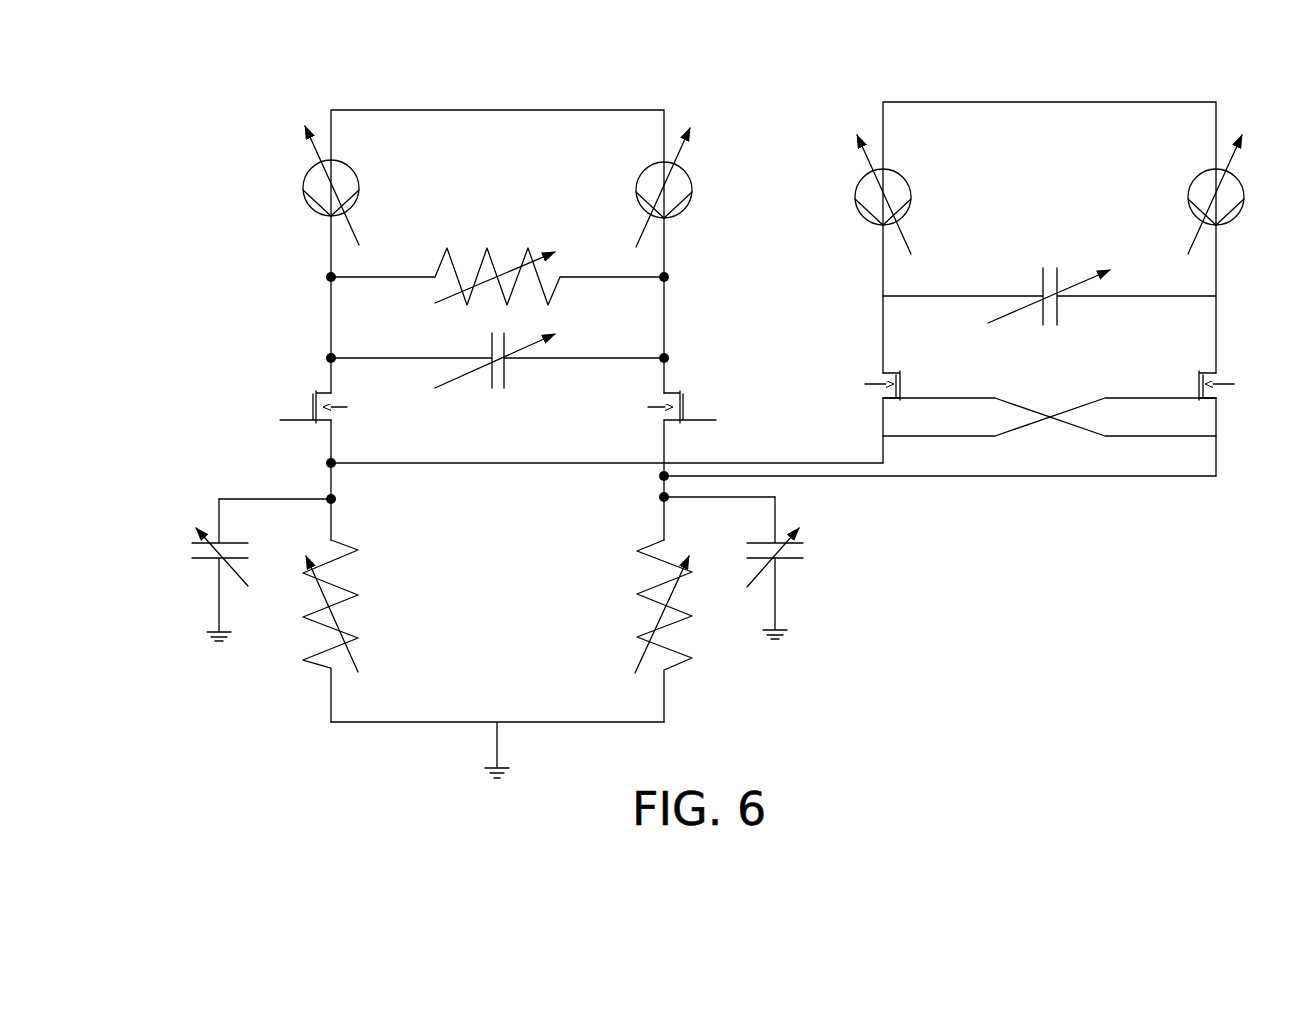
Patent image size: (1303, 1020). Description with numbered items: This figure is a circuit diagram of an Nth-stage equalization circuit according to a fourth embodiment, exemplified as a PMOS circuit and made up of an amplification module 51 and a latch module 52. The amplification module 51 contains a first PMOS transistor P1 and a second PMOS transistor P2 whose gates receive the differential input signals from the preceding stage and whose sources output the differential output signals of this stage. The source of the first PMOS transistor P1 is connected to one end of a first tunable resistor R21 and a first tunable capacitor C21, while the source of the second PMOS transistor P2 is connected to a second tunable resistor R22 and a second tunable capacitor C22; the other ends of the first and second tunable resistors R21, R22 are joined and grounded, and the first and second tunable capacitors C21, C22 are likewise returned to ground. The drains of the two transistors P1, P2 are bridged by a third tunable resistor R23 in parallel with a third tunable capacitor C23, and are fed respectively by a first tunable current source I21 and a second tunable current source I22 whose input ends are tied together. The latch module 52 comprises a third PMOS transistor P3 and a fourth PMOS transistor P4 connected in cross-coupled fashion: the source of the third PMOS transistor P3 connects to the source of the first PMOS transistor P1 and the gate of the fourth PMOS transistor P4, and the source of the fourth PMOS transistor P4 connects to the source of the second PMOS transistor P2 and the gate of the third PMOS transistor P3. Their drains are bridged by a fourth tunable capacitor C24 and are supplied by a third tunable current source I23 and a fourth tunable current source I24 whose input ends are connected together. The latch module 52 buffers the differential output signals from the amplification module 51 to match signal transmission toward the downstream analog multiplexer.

The amplification module 51 is at (265, 144).
The latch module 52 is at (855, 116).
The first tunable current source I21 is at (352, 185).
The second tunable current source I22 is at (645, 187).
The third tunable current source I23 is at (905, 194).
The fourth tunable current source I24 is at (1197, 194).
The third tunable resistor R23 is at (497, 292).
The third tunable capacitor C23 is at (497, 374).
The fourth tunable capacitor C24 is at (1049, 280).
The first PMOS transistor P1 is at (333, 409).
The second PMOS transistor P2 is at (665, 409).
The third PMOS transistor P3 is at (904, 379).
The fourth PMOS transistor P4 is at (1194, 379).
The first tunable capacitor C21 is at (197, 570).
The second tunable capacitor C22 is at (799, 568).
The first tunable resistor R21 is at (357, 631).
The second tunable resistor R22 is at (641, 631).